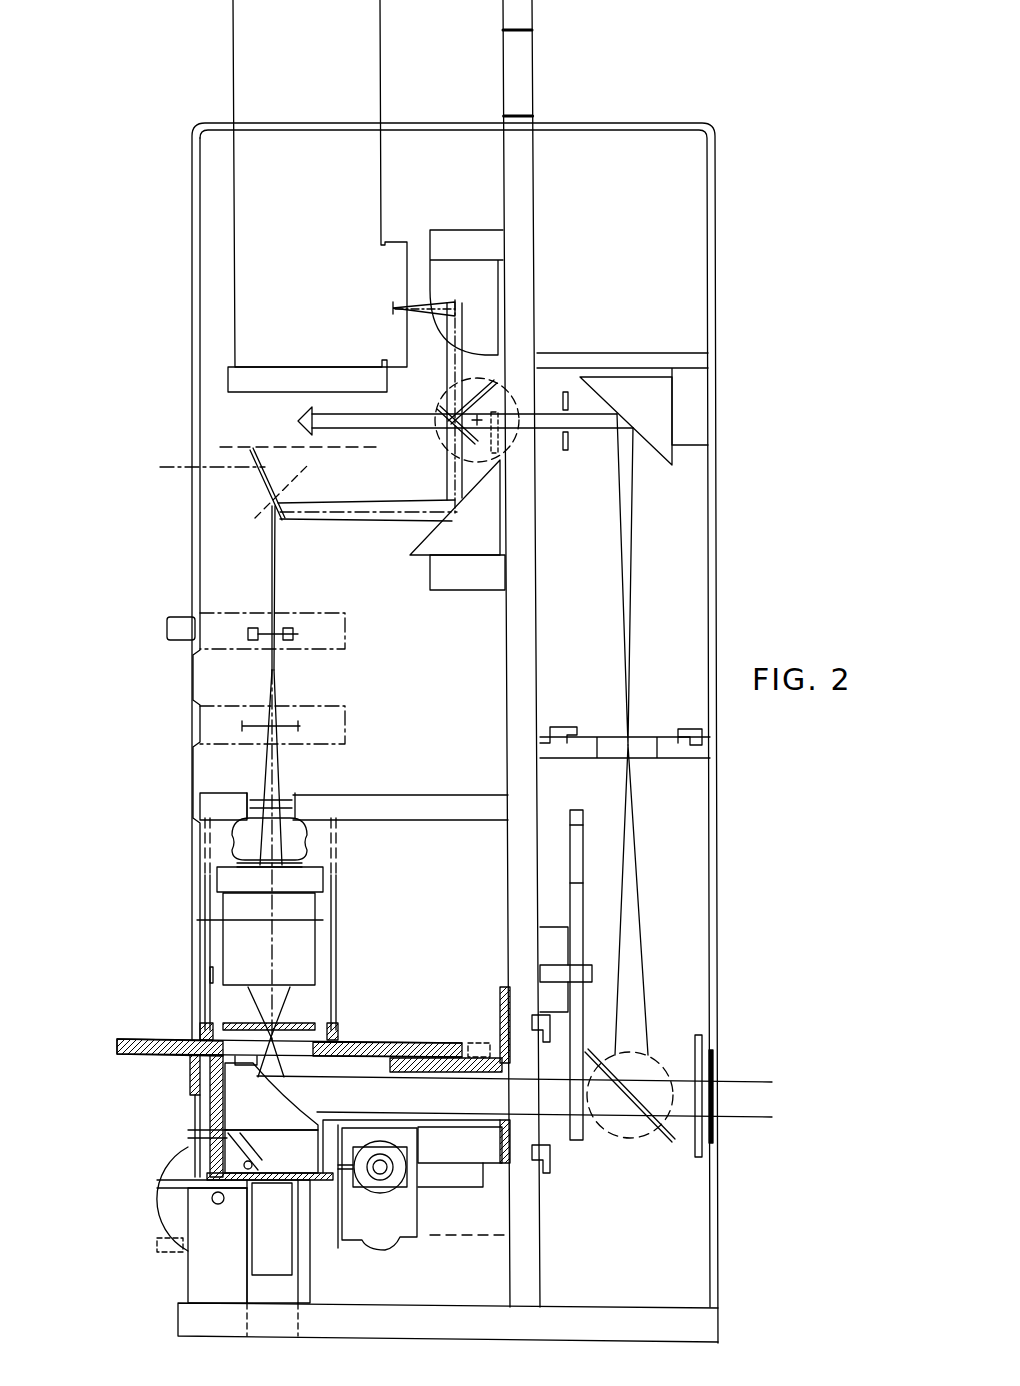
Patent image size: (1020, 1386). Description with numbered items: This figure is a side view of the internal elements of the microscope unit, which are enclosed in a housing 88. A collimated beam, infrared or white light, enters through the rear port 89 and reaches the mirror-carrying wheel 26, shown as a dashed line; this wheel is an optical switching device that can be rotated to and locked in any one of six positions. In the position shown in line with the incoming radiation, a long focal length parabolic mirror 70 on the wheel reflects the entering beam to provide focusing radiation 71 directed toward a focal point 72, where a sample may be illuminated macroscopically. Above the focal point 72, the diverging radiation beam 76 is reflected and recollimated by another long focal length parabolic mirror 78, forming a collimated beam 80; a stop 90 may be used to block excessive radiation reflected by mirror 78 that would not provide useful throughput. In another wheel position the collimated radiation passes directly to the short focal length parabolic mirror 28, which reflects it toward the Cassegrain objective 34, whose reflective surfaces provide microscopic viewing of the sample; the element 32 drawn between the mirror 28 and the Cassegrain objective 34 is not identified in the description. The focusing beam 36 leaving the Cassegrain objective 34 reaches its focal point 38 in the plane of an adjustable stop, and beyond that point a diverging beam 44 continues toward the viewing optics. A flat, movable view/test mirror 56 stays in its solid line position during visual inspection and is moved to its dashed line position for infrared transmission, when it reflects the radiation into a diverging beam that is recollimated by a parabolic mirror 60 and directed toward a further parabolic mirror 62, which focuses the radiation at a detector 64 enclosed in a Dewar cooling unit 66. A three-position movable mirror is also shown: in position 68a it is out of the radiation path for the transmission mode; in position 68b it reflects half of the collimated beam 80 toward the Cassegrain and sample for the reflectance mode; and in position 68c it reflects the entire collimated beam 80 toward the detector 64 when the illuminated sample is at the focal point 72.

The mirror-carrying wheel 26 is at (577, 1142).
The parabolic mirror 28 is at (283, 1105).
The sample slide 32 is at (300, 1022).
The Cassegrain objective 34 is at (320, 907).
The focusing beam 36 is at (278, 772).
The focal point 38 is at (276, 628).
The diverging beam 44 is at (278, 570).
The view/test mirror 56 is at (262, 510).
The parabolic mirror 60 is at (430, 540).
The parabolic mirror 62 is at (481, 335).
The detector 64 is at (392, 309).
The Dewar cooling unit 66 is at (357, 190).
The mirror position (transmission) 68a is at (500, 440).
The mirror position (reflectance) 68b is at (490, 381).
The mirror position (detector) 68c is at (458, 458).
The parabolic mirror 70 is at (633, 1112).
The focusing radiation 71 is at (645, 980).
The focal point 72 is at (630, 752).
The diverging radiation beam 76 is at (633, 600).
The parabolic mirror 78 is at (660, 445).
The collimated beam 80 is at (593, 412).
The housing 88 is at (720, 530).
The rear port 89 is at (712, 1050).
The stop 90 is at (566, 391).